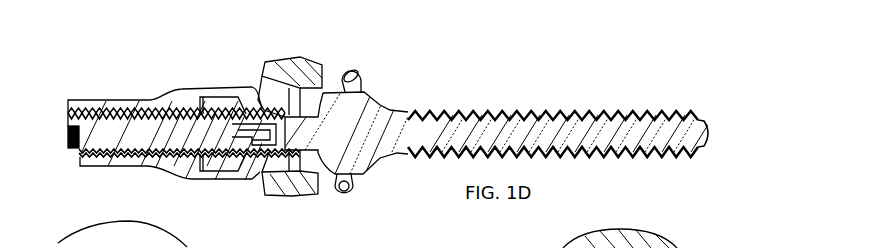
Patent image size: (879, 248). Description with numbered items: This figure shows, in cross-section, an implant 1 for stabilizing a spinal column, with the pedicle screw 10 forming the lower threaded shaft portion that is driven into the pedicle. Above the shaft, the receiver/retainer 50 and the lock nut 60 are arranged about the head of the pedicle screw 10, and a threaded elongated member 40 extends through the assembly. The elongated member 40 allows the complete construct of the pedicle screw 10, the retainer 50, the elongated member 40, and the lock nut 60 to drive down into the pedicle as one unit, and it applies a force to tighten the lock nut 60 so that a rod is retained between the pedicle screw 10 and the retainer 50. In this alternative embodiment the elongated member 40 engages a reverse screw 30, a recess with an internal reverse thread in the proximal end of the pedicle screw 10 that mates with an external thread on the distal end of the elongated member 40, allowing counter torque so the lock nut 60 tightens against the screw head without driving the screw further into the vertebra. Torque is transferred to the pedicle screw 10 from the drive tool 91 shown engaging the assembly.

The implant 1 is at (549, 81).
The pedicle screw 10 is at (672, 80).
The reverse screw 30 is at (251, 143).
The threaded elongated member 40 is at (213, 100).
The receiver/retainer 50 is at (286, 204).
The lock nut 60 is at (273, 85).
The drive tool 91 is at (144, 176).